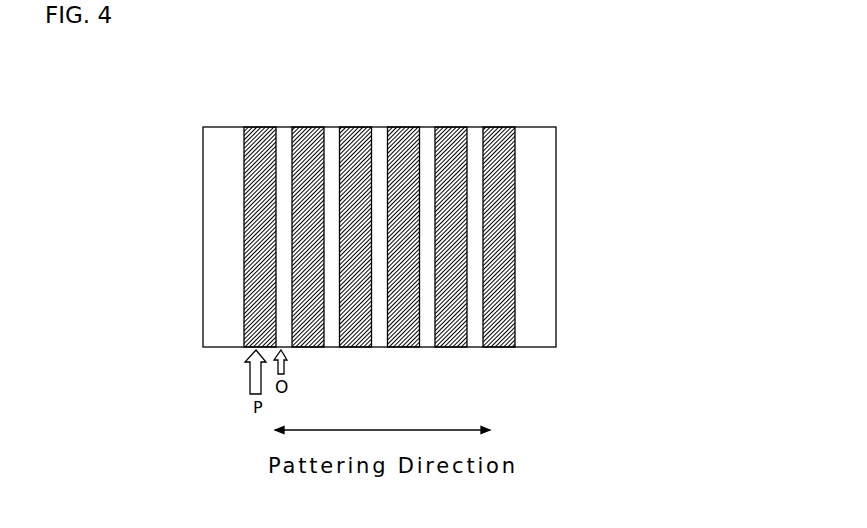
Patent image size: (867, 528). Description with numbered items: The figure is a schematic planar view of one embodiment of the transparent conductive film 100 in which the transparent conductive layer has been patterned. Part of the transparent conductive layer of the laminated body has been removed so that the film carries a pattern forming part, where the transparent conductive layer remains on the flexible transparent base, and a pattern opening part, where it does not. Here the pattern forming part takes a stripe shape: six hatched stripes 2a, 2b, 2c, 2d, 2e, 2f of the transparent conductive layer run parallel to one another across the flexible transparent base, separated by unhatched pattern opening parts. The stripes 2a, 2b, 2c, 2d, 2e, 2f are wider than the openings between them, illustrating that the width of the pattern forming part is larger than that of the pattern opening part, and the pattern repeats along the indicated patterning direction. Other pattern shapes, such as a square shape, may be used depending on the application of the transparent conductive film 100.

The transparent conductive film 100 is at (531, 118).
The pattern forming part 2a is at (258, 133).
The pattern forming part 2b is at (301, 133).
The pattern forming part 2c is at (354, 133).
The pattern forming part 2d is at (400, 133).
The pattern forming part 2e is at (448, 133).
The pattern forming part 2f is at (495, 133).